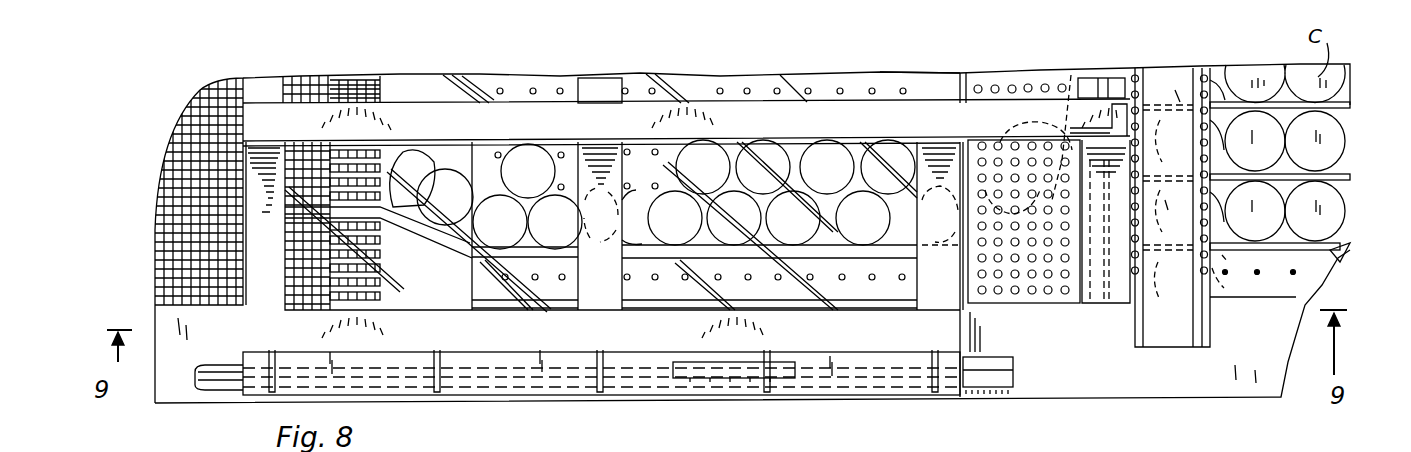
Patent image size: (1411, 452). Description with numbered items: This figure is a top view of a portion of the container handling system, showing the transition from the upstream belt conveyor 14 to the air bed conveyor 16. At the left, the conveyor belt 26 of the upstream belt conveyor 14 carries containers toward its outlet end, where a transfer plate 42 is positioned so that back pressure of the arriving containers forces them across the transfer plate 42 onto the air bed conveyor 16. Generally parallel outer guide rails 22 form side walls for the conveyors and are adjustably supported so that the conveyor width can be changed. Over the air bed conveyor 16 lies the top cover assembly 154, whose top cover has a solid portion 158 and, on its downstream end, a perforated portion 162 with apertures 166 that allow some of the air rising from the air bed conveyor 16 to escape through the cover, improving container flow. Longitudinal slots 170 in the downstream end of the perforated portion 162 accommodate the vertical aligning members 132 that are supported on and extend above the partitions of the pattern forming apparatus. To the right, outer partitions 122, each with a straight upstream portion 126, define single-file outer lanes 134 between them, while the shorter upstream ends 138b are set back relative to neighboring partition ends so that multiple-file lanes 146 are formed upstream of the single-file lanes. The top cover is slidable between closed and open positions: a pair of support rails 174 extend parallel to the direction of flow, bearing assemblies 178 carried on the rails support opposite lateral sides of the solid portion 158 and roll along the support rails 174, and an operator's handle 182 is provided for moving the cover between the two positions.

The upstream belt conveyor 14 is at (146, 176).
The air bed conveyor 16 is at (512, 63).
The outer guide rails 22 is at (454, 246).
The conveyor belt 26 is at (184, 112).
The transfer plate 42 is at (428, 90).
The outer partitions 122 is at (1323, 252).
The straight upstream portion 126 is at (1247, 243).
The aligning members 132 is at (1208, 280).
The single-file outer lanes 134 is at (1352, 190).
The upstream ends 138b is at (1071, 75).
The multiple-file lanes 146 is at (1090, 306).
The top cover assembly 154 is at (884, 72).
The solid portion 158 is at (661, 166).
The perforated portion 162 is at (997, 211).
The apertures 166 is at (1048, 294).
The longitudinal slots 170 is at (1171, 207).
The support rails 174 is at (1006, 384).
The bearing assemblies 178 is at (897, 406).
The operator's handle 182 is at (732, 380).